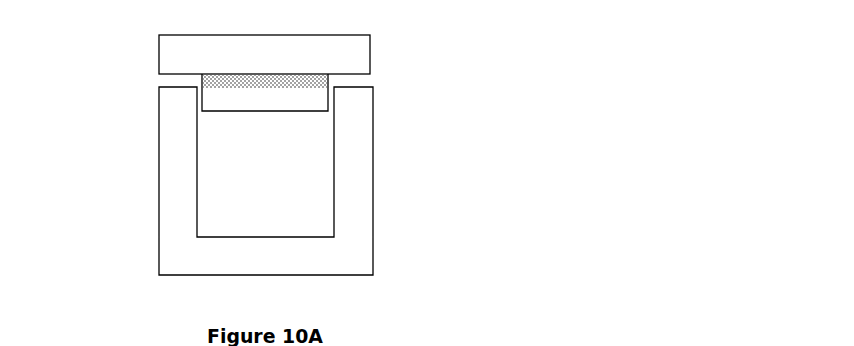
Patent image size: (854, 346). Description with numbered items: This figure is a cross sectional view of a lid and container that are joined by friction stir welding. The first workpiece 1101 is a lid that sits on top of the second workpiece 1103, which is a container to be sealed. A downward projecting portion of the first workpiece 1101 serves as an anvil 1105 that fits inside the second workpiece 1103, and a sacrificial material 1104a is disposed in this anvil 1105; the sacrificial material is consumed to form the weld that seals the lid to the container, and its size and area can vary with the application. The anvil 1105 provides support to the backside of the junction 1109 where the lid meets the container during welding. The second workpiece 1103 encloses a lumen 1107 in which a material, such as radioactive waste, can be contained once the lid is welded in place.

The first workpiece 1101 is at (370, 48).
The second workpiece 1103 is at (373, 163).
The sacrificial material 1104a is at (312, 81).
The anvil 1105 is at (202, 93).
The lumen 1107 is at (253, 186).
The junction 1109 is at (163, 81).